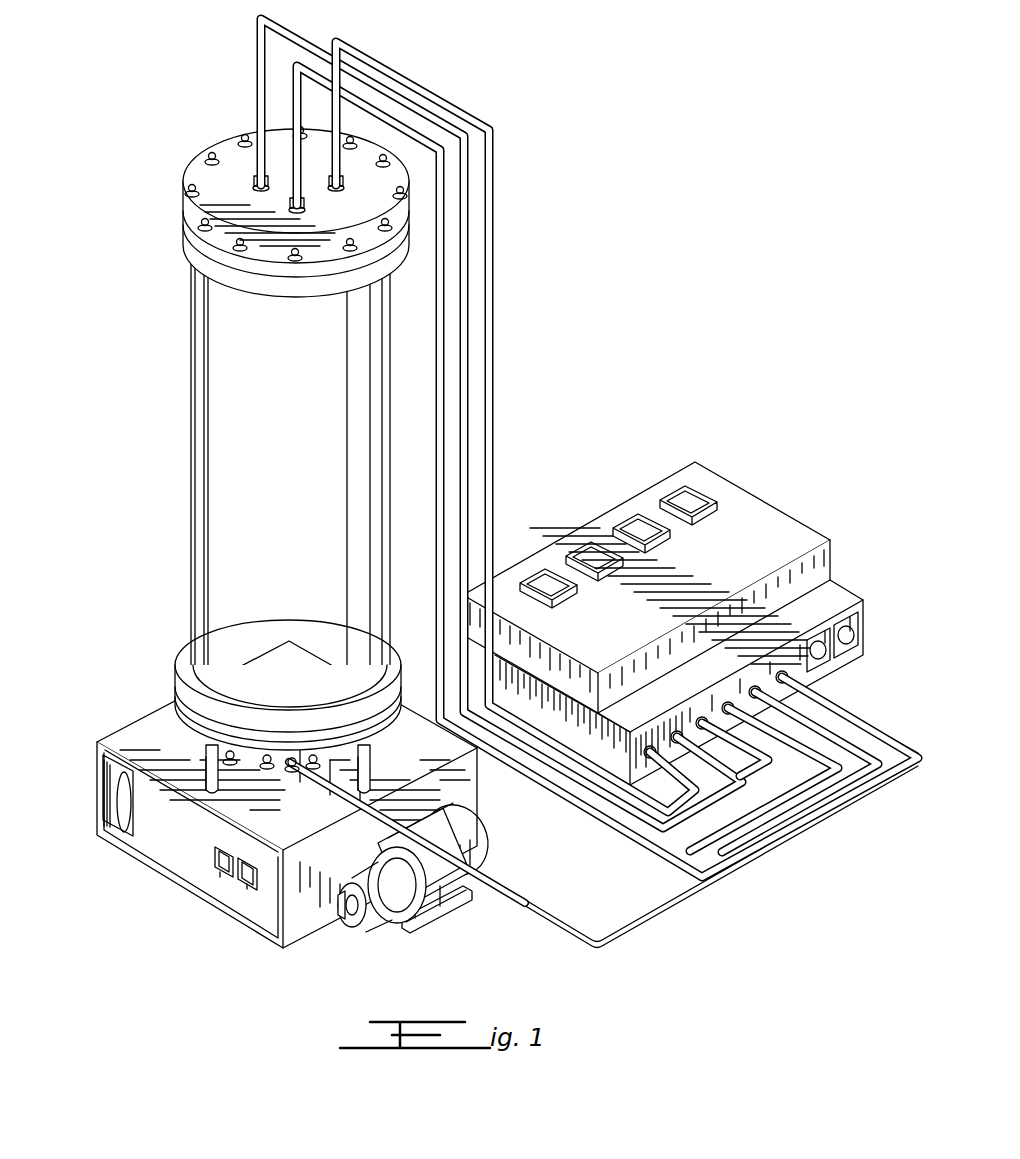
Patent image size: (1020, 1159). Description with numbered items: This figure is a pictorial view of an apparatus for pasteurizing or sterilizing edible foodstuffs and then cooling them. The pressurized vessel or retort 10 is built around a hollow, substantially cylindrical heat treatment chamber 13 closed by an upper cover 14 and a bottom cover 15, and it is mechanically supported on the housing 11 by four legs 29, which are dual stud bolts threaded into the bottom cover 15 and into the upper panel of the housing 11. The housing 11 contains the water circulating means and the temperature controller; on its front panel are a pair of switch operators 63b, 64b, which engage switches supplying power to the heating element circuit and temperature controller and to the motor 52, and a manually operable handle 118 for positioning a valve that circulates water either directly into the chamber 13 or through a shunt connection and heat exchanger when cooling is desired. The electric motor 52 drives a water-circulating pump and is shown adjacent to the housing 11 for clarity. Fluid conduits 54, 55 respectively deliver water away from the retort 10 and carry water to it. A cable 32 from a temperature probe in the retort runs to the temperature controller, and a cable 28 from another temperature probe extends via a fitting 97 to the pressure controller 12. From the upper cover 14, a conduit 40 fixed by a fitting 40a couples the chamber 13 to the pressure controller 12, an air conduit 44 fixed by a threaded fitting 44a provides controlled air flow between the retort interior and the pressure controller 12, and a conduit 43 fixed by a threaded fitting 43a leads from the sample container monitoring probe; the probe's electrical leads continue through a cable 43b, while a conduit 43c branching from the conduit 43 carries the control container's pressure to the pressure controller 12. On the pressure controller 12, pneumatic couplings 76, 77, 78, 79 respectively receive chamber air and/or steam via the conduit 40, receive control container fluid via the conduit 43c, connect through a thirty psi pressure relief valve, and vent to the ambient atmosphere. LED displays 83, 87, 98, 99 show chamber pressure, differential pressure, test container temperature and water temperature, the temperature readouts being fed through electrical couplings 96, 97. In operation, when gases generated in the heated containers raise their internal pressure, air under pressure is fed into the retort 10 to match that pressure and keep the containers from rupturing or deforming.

The pressurized vessel 10 is at (172, 433).
The housing 11 is at (115, 746).
The pressure controller 12 is at (775, 515).
The heat treatment chamber 13 is at (200, 520).
The upper cover 14 is at (198, 182).
The bottom cover 15 is at (232, 752).
The cable 28 is at (662, 912).
The legs 29 is at (205, 770).
The cable 32 is at (117, 805).
The conduit 40 is at (372, 77).
The fitting 40a is at (253, 177).
The conduit 43 is at (457, 103).
The threaded fitting 43a is at (325, 180).
The cable 43b is at (800, 822).
The conduit 43c is at (902, 834).
The air conduit 44 is at (395, 117).
The threaded fitting 44a is at (287, 210).
The electric motor 52 is at (463, 893).
The fluid conduit 54 is at (215, 866).
The fluid conduit 55 is at (243, 877).
The switch operator 63b is at (247, 888).
The switch operator 64b is at (222, 878).
The pneumatic coupling 76 is at (645, 758).
The pneumatic coupling 77 is at (672, 743).
The pneumatic coupling 78 is at (698, 730).
The pneumatic coupling 79 is at (728, 715).
The LED display 83 is at (585, 550).
The LED display 87 is at (541, 580).
The electrical coupling 96 is at (760, 700).
The electrical coupling 97 is at (820, 690).
The LED display 98 is at (640, 515).
The LED display 99 is at (688, 492).
The manually operable handle 118 is at (105, 815).